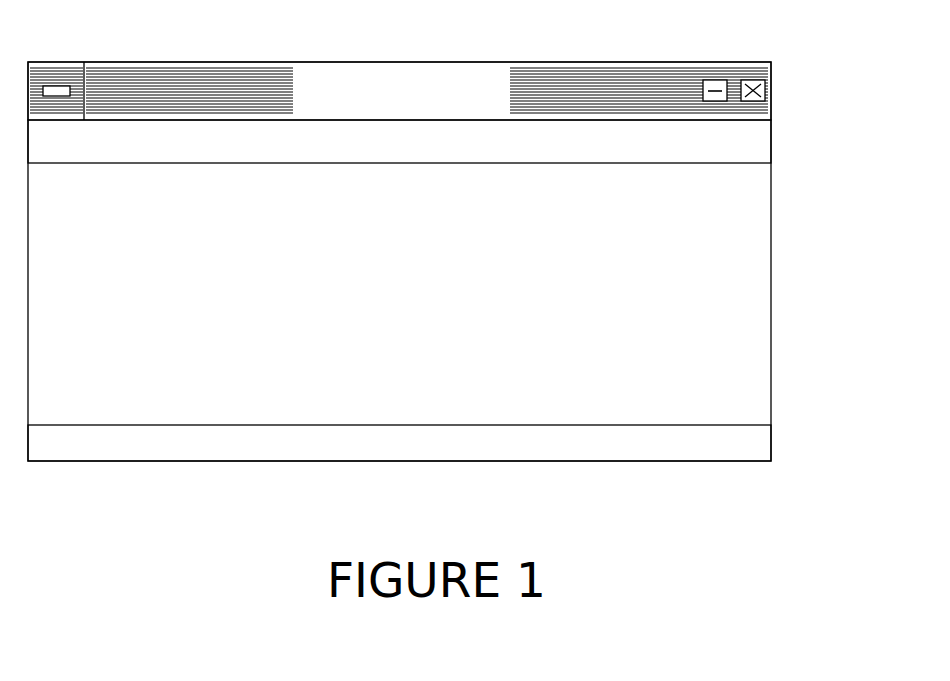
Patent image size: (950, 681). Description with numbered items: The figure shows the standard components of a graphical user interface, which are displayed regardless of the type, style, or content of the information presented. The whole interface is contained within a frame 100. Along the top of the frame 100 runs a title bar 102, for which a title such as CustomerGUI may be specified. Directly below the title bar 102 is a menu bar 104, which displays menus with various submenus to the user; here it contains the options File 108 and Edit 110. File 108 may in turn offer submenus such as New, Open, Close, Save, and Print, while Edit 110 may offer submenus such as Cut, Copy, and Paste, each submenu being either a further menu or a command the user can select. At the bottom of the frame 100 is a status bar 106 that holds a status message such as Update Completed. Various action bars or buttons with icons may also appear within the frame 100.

The frame 100 is at (771, 287).
The title bar 102 is at (684, 62).
The menu bar 104 is at (152, 144).
The status bar 106 is at (222, 447).
The File 108 is at (278, 144).
The Edit 110 is at (430, 143).